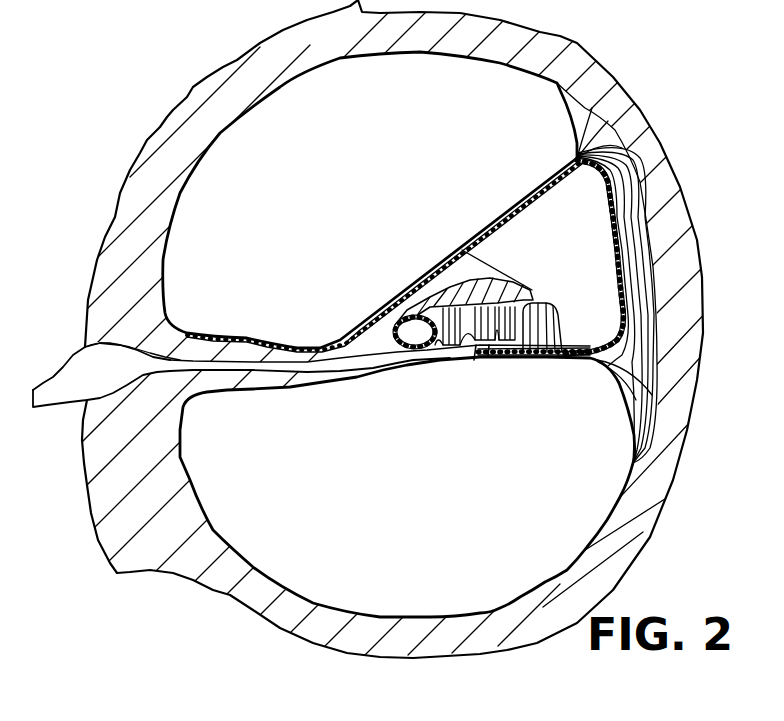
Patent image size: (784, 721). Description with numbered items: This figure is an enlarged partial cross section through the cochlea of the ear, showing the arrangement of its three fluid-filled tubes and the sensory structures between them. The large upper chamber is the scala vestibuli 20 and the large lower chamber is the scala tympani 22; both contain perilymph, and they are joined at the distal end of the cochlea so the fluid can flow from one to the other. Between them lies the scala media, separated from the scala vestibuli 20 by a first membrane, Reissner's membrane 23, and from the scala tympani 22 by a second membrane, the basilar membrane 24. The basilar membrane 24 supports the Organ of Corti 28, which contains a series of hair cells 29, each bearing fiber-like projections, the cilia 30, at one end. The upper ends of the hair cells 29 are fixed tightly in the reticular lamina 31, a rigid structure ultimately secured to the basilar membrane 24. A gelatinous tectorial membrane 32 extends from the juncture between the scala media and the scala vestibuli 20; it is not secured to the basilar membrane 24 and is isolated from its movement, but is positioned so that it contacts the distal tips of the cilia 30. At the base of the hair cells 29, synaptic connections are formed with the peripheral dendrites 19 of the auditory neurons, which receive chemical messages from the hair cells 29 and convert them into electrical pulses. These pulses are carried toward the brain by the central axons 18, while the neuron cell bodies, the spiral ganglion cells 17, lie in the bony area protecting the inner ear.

The spiral ganglion cells 17 is at (100, 383).
The central axons 18 is at (36, 386).
The peripheral dendrites 19 is at (447, 353).
The scala vestibuli 20 is at (519, 88).
The scala tympani 22 is at (585, 513).
The Reissner's membrane 23 is at (491, 218).
The basilar membrane 24 is at (537, 357).
The Organ of Corti 28 is at (556, 317).
The hair cells 29 is at (488, 357).
The cilia 30 is at (527, 297).
The reticular lamina 31 is at (548, 306).
The tectorial membrane 32 is at (487, 286).